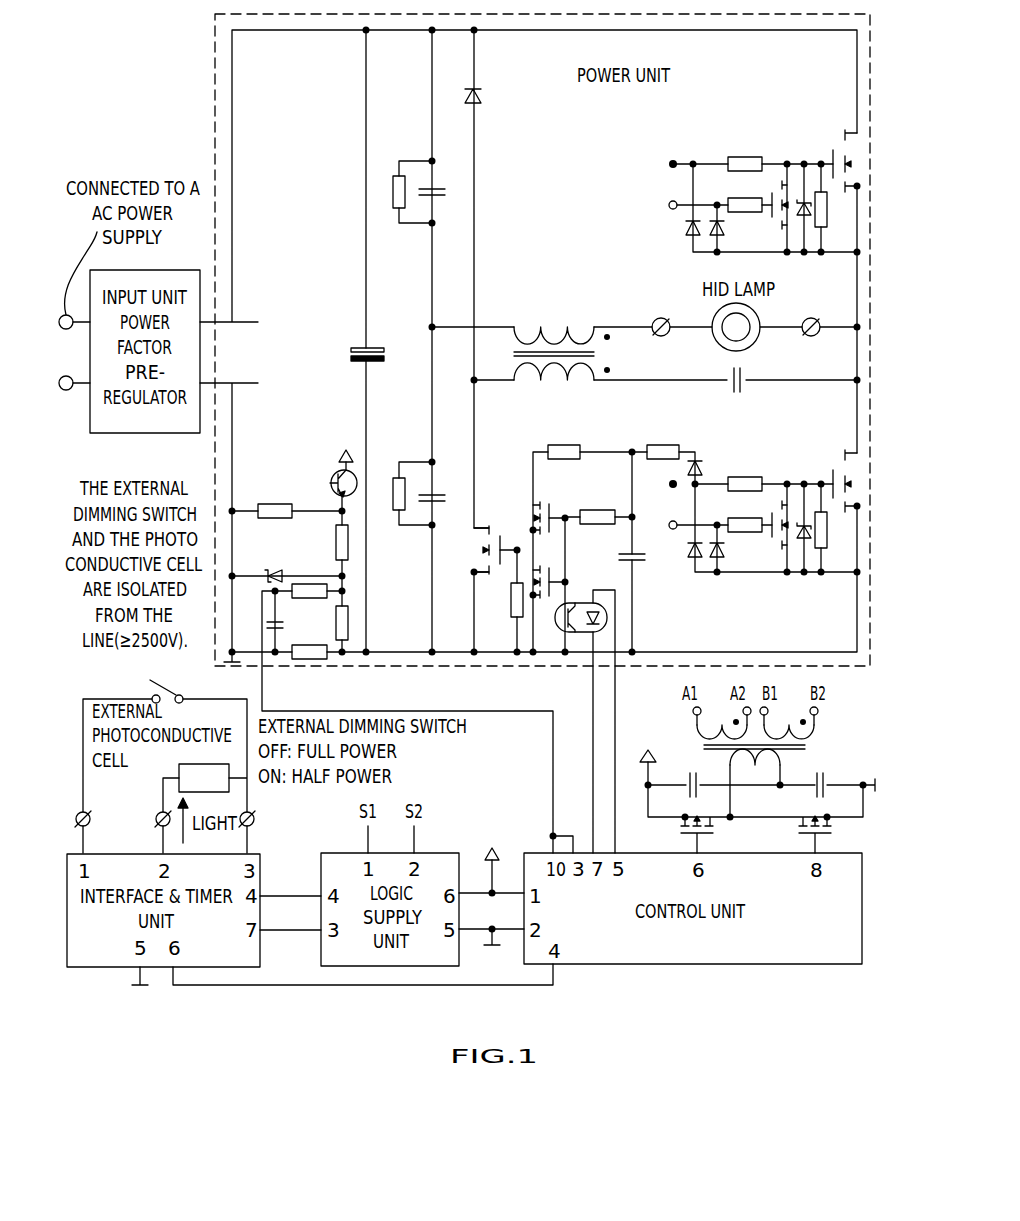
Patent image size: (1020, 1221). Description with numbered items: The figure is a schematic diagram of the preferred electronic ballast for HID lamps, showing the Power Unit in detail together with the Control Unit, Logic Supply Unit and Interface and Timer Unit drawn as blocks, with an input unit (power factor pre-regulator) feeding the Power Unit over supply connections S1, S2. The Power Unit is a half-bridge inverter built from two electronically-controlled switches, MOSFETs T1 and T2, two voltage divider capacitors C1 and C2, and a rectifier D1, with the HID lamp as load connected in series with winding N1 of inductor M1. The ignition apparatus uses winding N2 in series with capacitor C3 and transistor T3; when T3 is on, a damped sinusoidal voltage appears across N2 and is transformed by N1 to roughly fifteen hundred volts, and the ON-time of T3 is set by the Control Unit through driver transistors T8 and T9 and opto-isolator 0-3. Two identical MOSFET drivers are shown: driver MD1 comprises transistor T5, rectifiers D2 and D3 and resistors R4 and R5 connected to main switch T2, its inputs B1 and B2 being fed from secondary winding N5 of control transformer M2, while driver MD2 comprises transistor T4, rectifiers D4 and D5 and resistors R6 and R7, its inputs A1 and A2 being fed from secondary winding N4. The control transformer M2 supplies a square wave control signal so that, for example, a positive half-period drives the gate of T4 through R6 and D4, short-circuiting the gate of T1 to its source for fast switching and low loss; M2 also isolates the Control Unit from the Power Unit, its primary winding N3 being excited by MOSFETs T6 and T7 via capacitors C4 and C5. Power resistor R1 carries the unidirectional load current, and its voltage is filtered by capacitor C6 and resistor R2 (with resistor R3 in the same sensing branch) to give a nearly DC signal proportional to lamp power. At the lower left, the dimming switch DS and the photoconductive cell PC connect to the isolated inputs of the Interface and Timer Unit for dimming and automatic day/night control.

The rectifier D1 is at (487, 95).
The voltage divider capacitor C1 is at (429, 490).
The voltage divider capacitor C2 is at (429, 187).
The capacitor C3 is at (736, 390).
The capacitor C4 is at (687, 773).
The capacitor C5 is at (817, 773).
The capacitor C6 is at (283, 631).
The power resistor R1 is at (320, 632).
The resistor R2 is at (309, 603).
The resistor R3 is at (326, 542).
The resistor R4 is at (745, 152).
The resistor R5 is at (745, 193).
The resistor R6 is at (745, 472).
The resistor R7 is at (745, 513).
The MOSFET T1 is at (834, 481).
The MOSFET T2 is at (834, 160).
The transistor T3 is at (488, 531).
The MOSFET T4 is at (775, 535).
The MOSFET T5 is at (775, 214).
The MOSFET T6 is at (715, 830).
The MOSFET T7 is at (833, 830).
The driver transistor T8 is at (545, 505).
The driver transistor T9 is at (545, 569).
The rectifier D2 is at (682, 228).
The rectifier D3 is at (730, 228).
The rectifier D4 is at (684, 550).
The rectifier D5 is at (730, 550).
The winding N1 is at (554, 321).
The winding N2 is at (554, 386).
The primary winding N3 is at (755, 767).
The secondary winding N4 is at (722, 721).
The secondary winding N5 is at (789, 721).
The inductor M1 is at (538, 350).
The control transformer M2 is at (730, 731).
The supply terminal S1 is at (274, 384).
The supply terminal S2 is at (274, 323).
The input B1 is at (657, 164).
The input B2 is at (657, 205).
The input A1 is at (658, 525).
The input A2 is at (658, 484).
The dimming switch DS is at (174, 685).
The photoconductive cell PC is at (204, 778).
The MOSFET driver MD1 is at (753, 174).
The MOSFET driver MD2 is at (702, 496).
The opto-isolator 0-3 is at (581, 599).